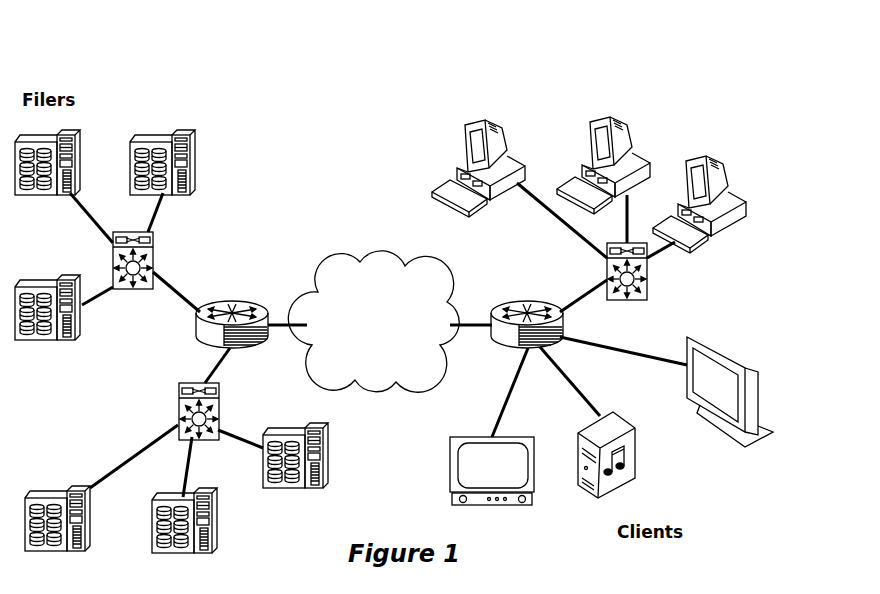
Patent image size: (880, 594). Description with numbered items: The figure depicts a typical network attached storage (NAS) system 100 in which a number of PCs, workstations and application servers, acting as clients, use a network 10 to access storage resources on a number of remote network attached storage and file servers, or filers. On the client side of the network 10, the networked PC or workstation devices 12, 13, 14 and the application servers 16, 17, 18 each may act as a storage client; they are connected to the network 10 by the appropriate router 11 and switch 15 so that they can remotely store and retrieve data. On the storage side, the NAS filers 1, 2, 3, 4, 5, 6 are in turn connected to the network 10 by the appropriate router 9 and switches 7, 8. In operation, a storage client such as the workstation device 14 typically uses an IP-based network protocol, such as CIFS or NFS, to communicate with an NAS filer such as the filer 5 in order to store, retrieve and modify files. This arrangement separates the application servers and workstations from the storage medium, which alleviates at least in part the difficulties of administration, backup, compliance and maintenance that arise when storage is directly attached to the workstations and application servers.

The NAS system 100 is at (722, 96).
The NAS filer 1 is at (330, 433).
The NAS filer 2 is at (193, 138).
The NAS filer 3 is at (218, 508).
The NAS filer 4 is at (77, 138).
The NAS filer 5 is at (92, 506).
The NAS filer 6 is at (72, 277).
The switch 7 is at (180, 384).
The switch 8 is at (154, 242).
The router 9 is at (242, 305).
The network 10 is at (373, 321).
The router 11 is at (520, 306).
The PC or workstation device 12 is at (496, 130).
The PC or workstation device 13 is at (620, 123).
The PC or workstation device 14 is at (706, 162).
The switch 15 is at (648, 277).
The application server 16 is at (714, 340).
The application server 17 is at (630, 421).
The application server 18 is at (516, 438).